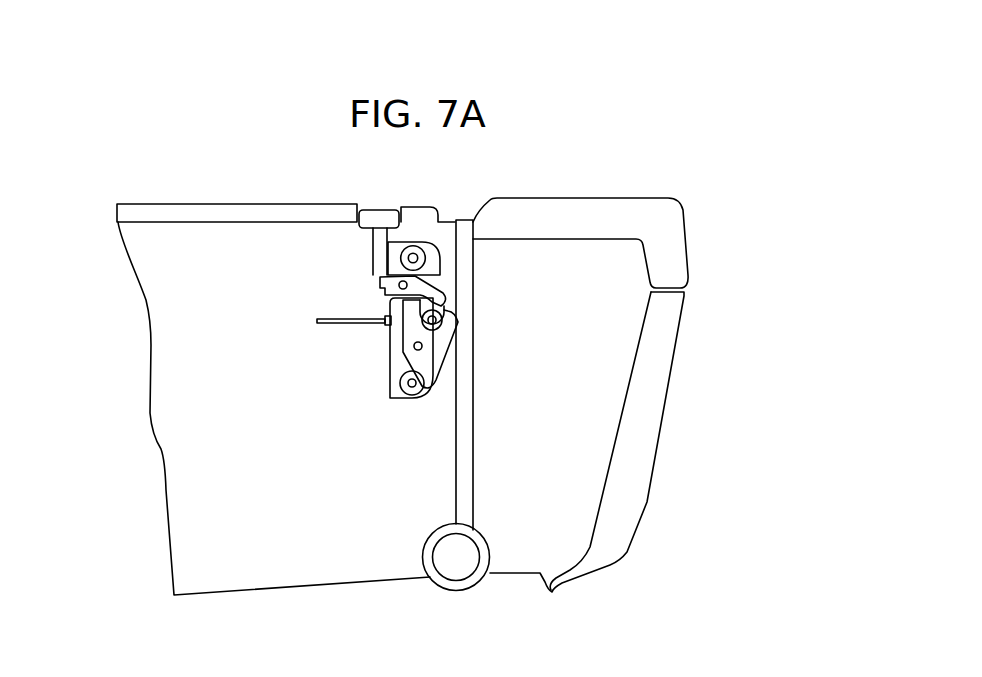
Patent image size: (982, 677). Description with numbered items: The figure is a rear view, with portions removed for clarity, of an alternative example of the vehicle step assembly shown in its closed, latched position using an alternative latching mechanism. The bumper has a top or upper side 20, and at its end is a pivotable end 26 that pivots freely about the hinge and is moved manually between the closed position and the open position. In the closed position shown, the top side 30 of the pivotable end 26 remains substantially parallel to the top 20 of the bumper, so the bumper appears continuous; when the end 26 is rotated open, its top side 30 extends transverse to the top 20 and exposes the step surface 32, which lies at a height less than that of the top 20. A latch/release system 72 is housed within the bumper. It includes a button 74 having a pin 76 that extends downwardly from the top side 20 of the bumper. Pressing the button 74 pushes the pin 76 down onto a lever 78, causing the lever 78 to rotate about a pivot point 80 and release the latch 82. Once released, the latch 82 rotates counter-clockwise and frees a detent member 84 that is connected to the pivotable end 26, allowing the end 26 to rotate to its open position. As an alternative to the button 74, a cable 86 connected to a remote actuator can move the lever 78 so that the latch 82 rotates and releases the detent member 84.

The top or upper side of the bumper 20 is at (205, 204).
The pivotable end 26 is at (645, 502).
The top side of the end 30 is at (585, 198).
The step surface 32 is at (456, 450).
The latch/release system 72 is at (381, 371).
The button 74 is at (380, 204).
The pin 76 is at (373, 252).
The lever 78 is at (380, 283).
The pivot point 80 is at (398, 288).
The latch 82 is at (437, 345).
The detent member 84 is at (436, 316).
The cable 86 is at (343, 327).